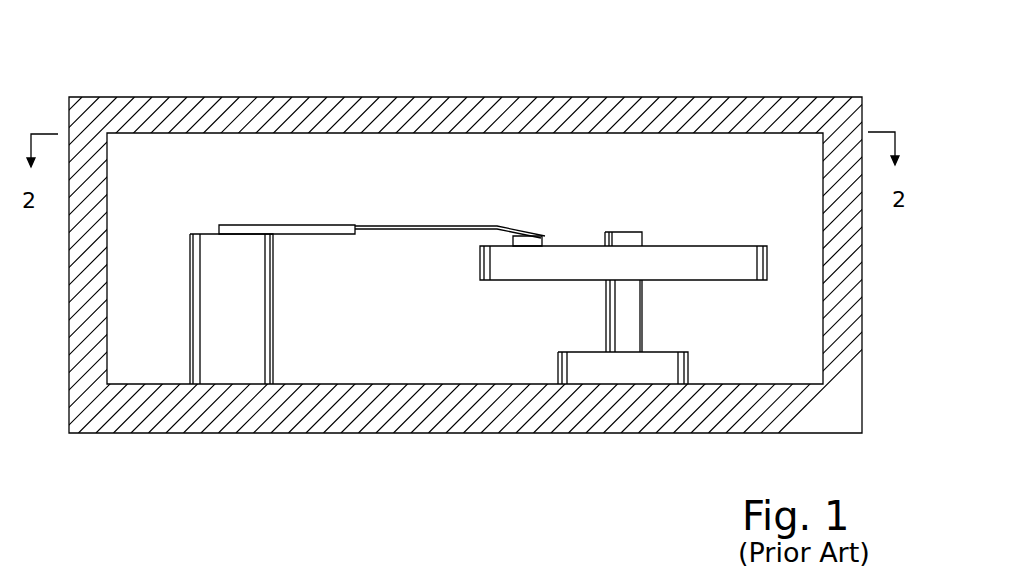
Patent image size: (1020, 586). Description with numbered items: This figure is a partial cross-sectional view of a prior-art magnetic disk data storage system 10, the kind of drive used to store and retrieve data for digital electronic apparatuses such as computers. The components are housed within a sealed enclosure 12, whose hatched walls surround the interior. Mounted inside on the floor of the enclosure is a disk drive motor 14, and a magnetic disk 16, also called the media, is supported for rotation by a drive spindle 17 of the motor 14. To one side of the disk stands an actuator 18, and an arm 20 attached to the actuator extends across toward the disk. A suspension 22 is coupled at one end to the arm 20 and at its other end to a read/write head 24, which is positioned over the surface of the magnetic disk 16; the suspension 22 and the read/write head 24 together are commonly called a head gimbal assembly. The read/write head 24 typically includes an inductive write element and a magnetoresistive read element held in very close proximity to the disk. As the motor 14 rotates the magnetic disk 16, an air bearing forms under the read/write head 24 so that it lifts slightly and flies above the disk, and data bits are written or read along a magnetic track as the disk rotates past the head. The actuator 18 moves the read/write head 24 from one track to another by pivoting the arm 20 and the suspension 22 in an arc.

The magnetic disk data storage system 10 is at (808, 57).
The sealed enclosure 12 is at (450, 428).
The disk drive motor 14 is at (626, 368).
The magnetic disk 16 is at (710, 253).
The drive spindle 17 is at (628, 238).
The actuator 18 is at (256, 342).
The arm 20 is at (344, 226).
The suspension 22 is at (425, 229).
The read/write head 24 is at (542, 241).